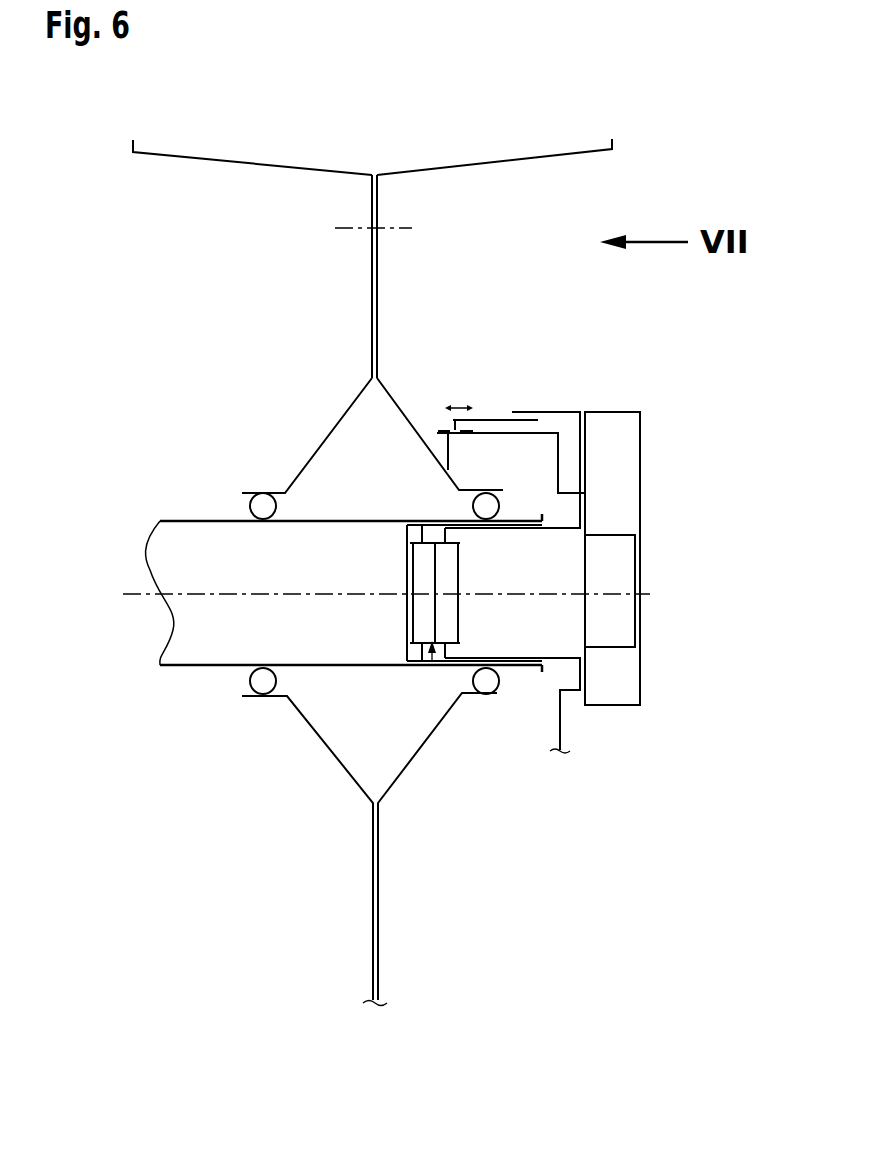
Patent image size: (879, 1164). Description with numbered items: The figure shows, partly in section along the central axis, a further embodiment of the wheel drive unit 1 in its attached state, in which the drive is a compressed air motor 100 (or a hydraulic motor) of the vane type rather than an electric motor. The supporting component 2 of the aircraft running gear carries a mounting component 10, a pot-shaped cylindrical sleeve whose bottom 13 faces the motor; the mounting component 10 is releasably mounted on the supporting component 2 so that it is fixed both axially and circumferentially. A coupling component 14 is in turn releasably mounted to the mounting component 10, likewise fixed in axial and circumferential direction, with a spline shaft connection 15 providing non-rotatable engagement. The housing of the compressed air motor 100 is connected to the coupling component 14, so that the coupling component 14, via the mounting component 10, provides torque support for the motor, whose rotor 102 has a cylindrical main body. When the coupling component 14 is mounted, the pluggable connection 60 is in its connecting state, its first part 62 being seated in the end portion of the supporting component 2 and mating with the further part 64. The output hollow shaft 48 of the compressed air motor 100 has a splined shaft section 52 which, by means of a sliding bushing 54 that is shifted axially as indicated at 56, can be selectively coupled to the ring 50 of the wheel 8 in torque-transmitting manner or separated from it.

The sensor housing 1 is at (586, 388).
The supporting component 2 is at (207, 650).
The wheel 8 is at (372, 297).
The mounting component 10 is at (517, 663).
The bottom of sleeve 13 is at (405, 572).
The coupling component 14 is at (566, 655).
The spline shaft connection 15 is at (513, 528).
The output hollow shaft 48 is at (520, 435).
The ring 50 is at (447, 434).
The splined shaft section 52 is at (447, 445).
The sliding bushing 54 is at (450, 427).
The adjusting element 56 is at (492, 410).
The pluggable connection 60 is at (432, 662).
The first part of pluggable connection 62 is at (420, 622).
The second sensor element 64 is at (447, 623).
The compressed air motor 100 is at (662, 466).
The rotor 102 is at (623, 580).